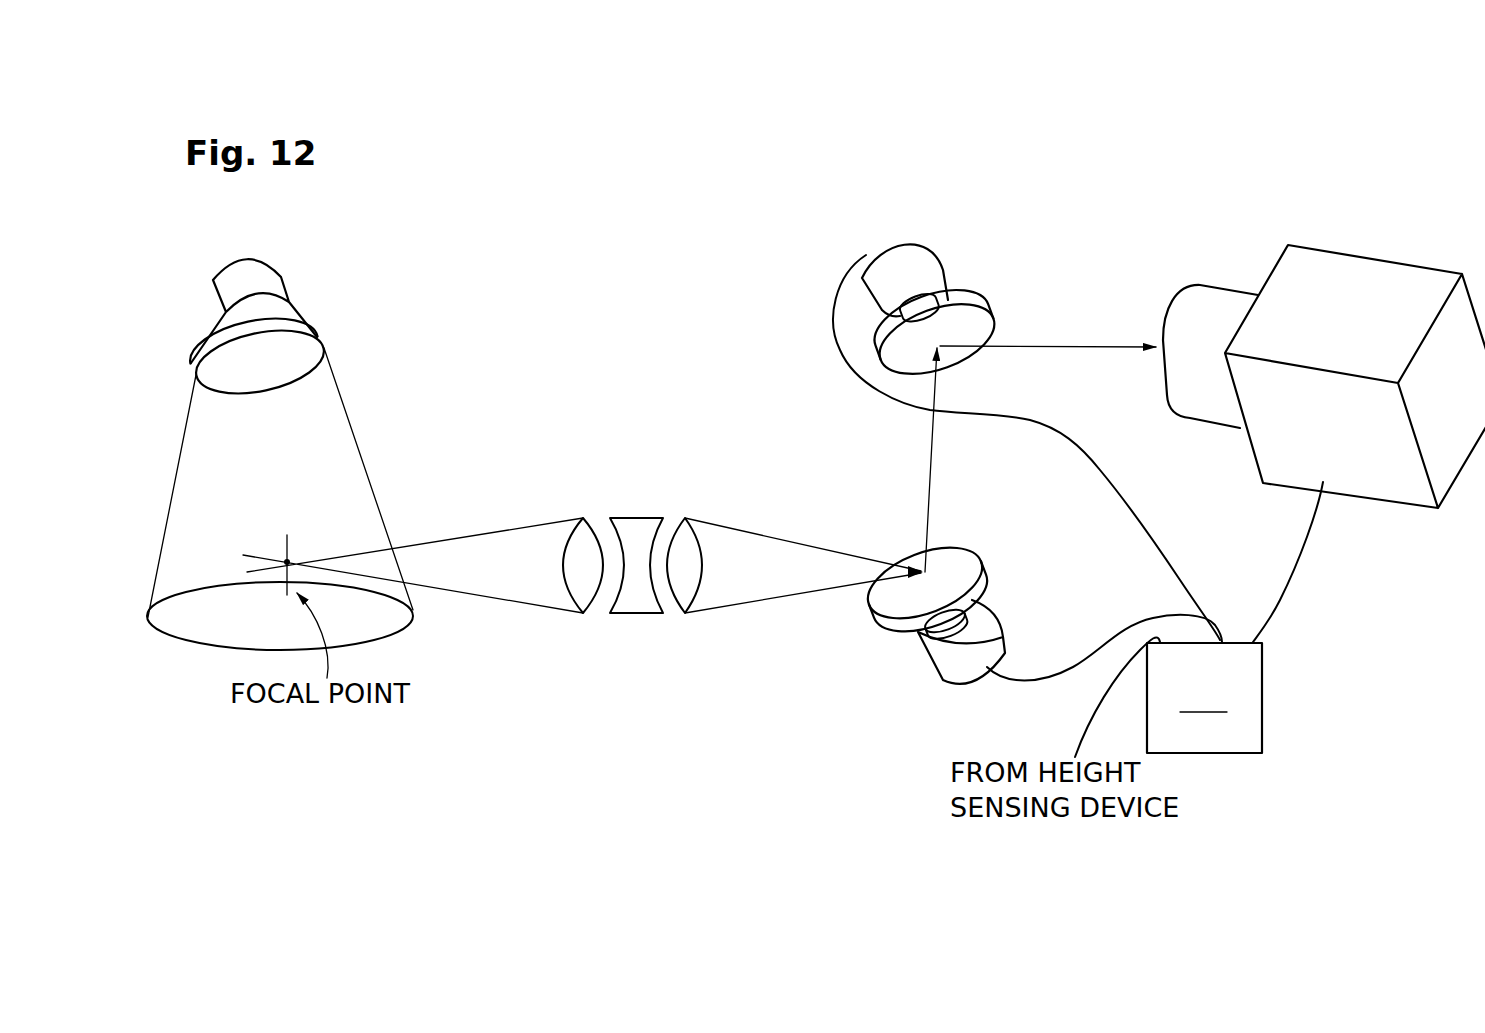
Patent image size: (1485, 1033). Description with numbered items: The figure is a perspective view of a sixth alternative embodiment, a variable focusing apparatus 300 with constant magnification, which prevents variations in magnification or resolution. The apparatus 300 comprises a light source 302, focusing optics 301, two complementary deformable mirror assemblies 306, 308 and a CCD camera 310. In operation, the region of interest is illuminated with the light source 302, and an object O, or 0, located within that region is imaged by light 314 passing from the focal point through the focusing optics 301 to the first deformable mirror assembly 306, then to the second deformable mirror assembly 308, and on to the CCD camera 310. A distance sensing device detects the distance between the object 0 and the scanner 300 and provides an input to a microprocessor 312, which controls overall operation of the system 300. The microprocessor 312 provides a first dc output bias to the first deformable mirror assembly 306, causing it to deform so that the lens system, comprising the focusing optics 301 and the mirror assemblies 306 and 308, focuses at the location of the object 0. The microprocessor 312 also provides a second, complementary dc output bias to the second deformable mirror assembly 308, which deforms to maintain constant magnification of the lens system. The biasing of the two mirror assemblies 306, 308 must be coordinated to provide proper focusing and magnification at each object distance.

The variable focusing apparatus 300 is at (788, 249).
The focusing optics 301 is at (636, 510).
The light source 302 is at (283, 283).
The first deformable mirror assembly 306 is at (947, 543).
The second deformable mirror assembly 308 is at (1000, 320).
The CCD camera 310 is at (1297, 206).
The microprocessor 312 is at (1204, 698).
The light beam 314 is at (450, 537).
The object 0 is at (287, 560).